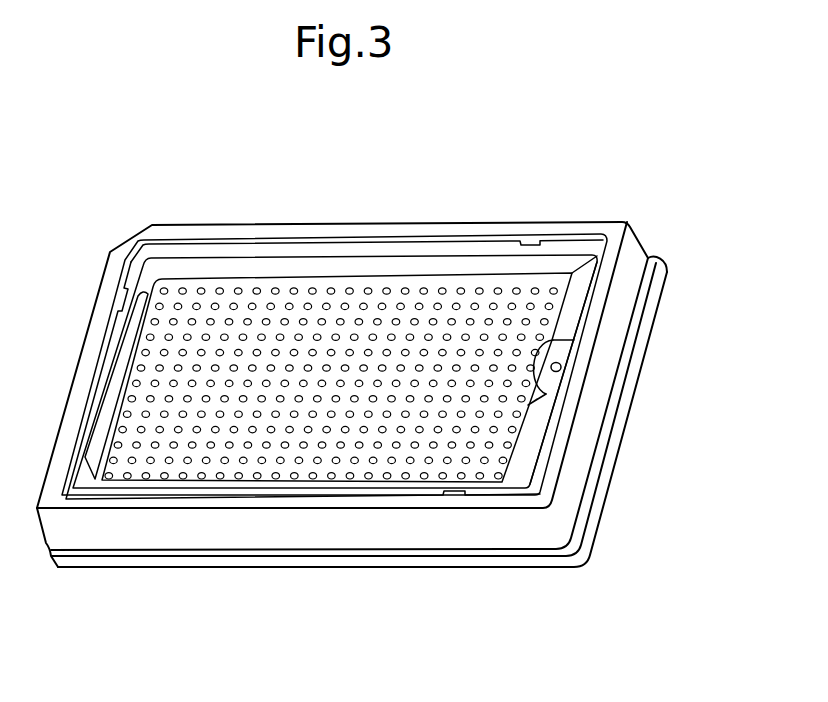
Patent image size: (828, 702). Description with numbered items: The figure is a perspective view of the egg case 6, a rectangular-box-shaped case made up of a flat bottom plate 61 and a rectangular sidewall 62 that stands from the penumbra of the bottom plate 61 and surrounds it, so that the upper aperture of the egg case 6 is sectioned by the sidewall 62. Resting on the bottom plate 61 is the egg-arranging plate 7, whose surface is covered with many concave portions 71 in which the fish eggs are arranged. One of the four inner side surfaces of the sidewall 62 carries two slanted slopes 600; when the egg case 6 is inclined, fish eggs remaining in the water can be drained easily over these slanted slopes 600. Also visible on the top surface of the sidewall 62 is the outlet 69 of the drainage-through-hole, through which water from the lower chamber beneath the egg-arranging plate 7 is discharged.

The egg case 6 is at (392, 415).
The egg-arranging plate 7 is at (337, 314).
The concave portions 71 is at (300, 288).
The bottom plate 61 is at (403, 560).
The sidewall 62 is at (133, 527).
The outlet 69 is at (560, 368).
The slanted slopes 600 is at (575, 297).